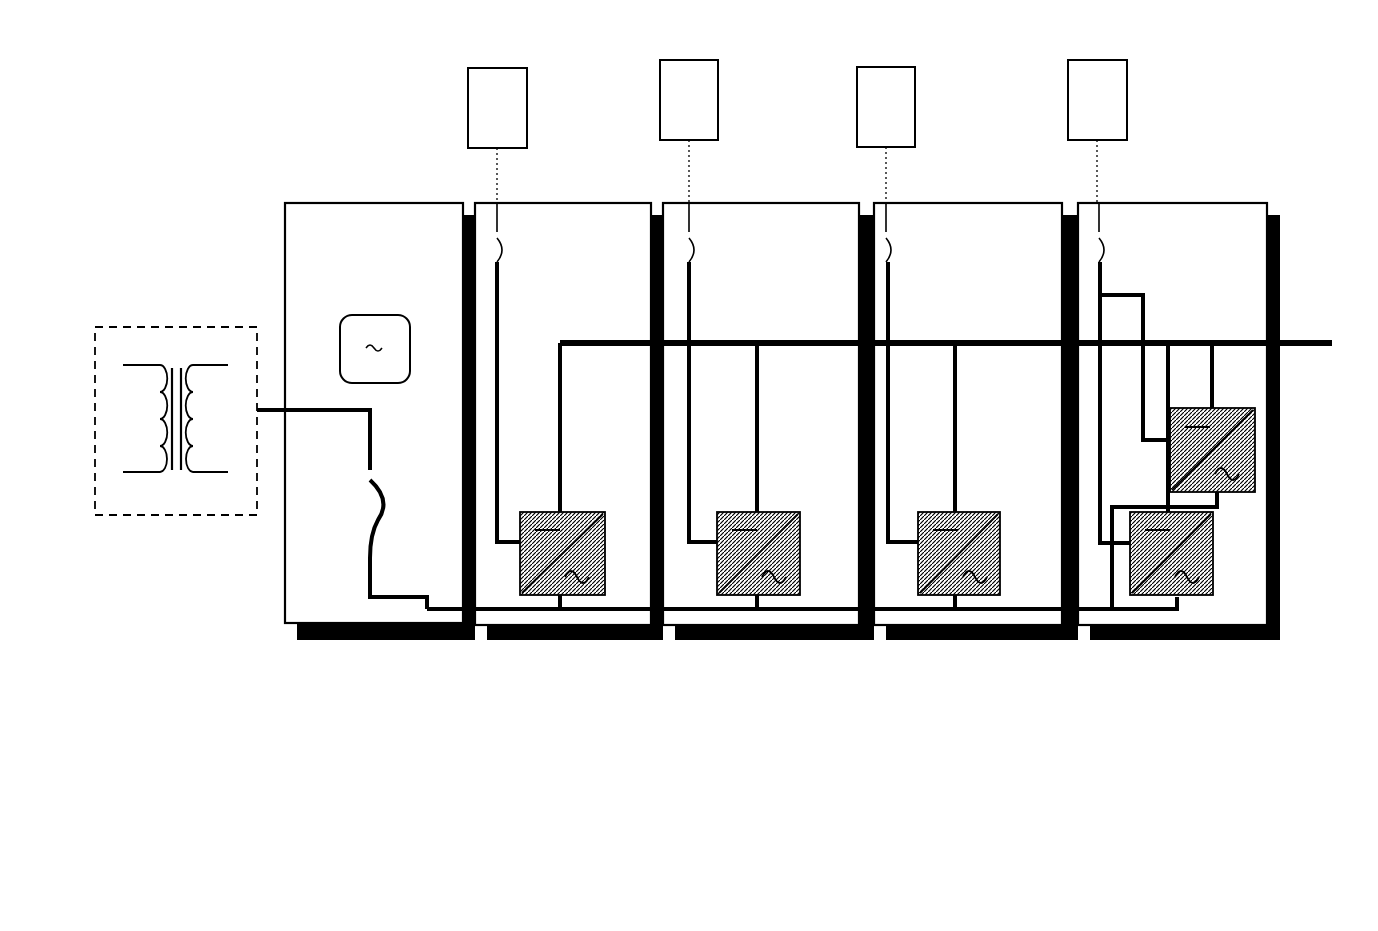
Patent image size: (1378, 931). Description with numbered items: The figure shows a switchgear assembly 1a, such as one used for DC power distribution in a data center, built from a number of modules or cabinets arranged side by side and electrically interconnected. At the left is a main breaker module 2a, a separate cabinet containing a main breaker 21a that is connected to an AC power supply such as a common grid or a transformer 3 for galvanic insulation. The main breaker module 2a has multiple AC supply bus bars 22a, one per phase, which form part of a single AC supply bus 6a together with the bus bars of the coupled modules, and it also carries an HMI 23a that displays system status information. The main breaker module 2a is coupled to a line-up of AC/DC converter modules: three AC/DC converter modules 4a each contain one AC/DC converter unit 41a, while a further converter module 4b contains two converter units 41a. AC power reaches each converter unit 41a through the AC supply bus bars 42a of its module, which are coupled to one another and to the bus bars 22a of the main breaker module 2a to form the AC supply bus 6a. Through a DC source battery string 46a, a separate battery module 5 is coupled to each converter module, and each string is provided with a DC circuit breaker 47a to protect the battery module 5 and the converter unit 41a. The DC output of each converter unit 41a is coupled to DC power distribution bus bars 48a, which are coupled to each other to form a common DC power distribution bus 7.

The switchgear assembly 1a is at (1177, 113).
The main breaker module 2a is at (380, 222).
The transformer / grid connection 3 is at (188, 340).
The AC/DC converter module 4a is at (605, 240).
The AC/DC converter module 4b is at (1195, 245).
The battery module 5 is at (508, 125).
The AC supply bus 6a is at (632, 605).
The common DC power distribution bus 7 is at (1296, 340).
The main breaker 21a is at (360, 520).
The AC supply bus bars 22a is at (418, 612).
The HMI 23a is at (357, 343).
The AC/DC converter unit 41a is at (545, 590).
The AC supply bus bars 42a is at (488, 612).
The DC source battery string 46a is at (497, 355).
The DC circuit breaker 47a is at (500, 260).
The DC power distribution bus bars 48a is at (580, 343).